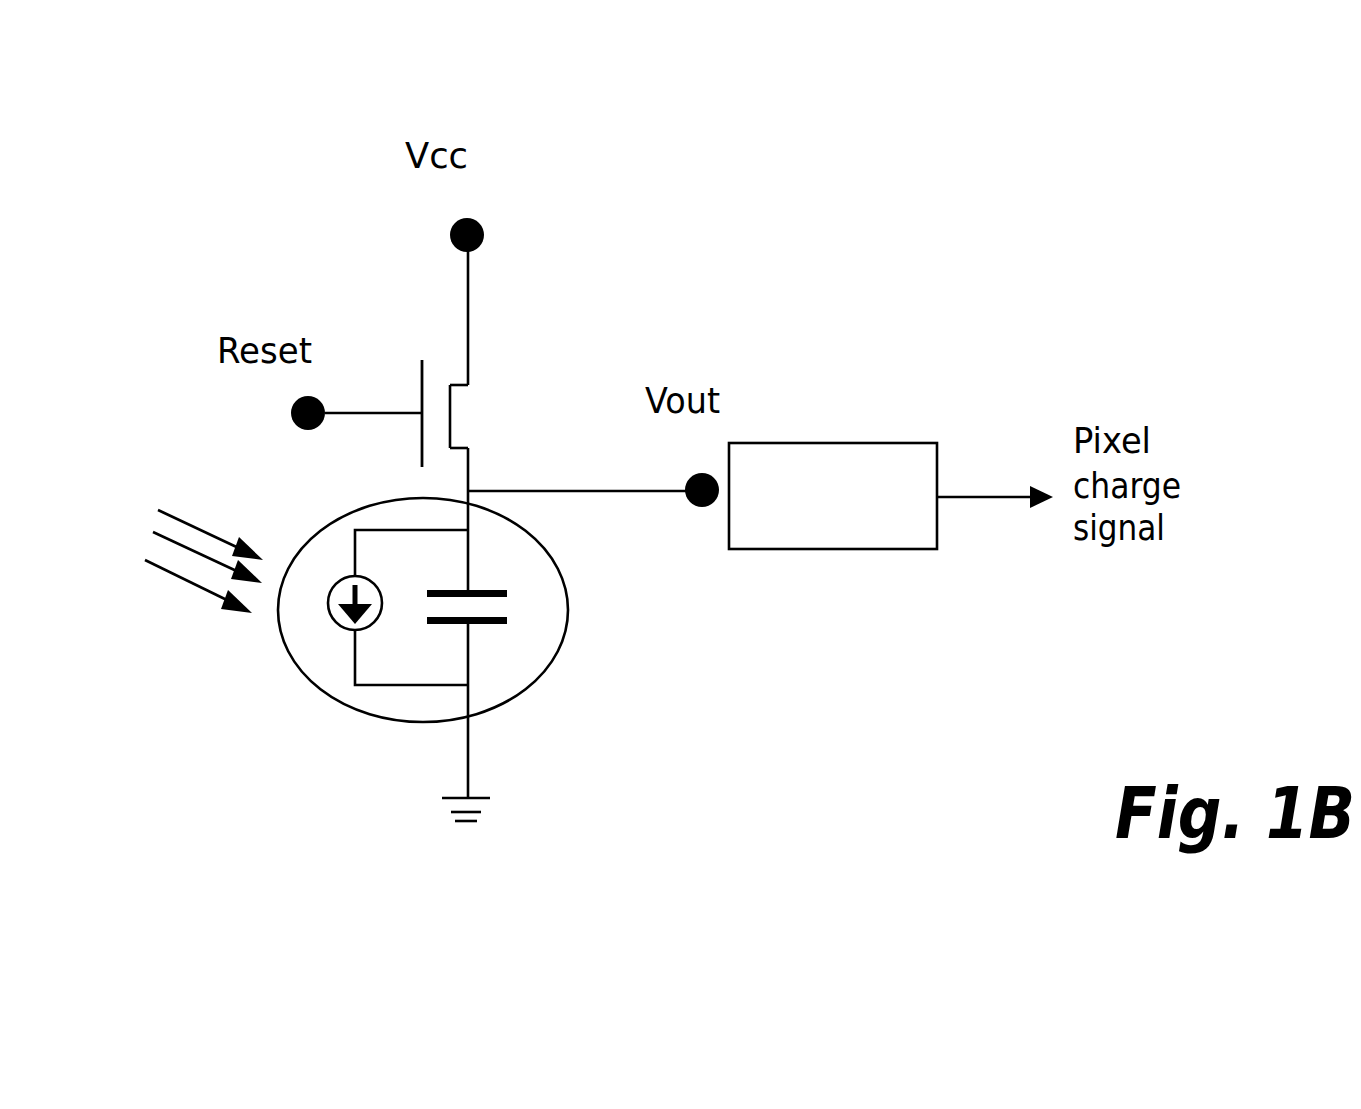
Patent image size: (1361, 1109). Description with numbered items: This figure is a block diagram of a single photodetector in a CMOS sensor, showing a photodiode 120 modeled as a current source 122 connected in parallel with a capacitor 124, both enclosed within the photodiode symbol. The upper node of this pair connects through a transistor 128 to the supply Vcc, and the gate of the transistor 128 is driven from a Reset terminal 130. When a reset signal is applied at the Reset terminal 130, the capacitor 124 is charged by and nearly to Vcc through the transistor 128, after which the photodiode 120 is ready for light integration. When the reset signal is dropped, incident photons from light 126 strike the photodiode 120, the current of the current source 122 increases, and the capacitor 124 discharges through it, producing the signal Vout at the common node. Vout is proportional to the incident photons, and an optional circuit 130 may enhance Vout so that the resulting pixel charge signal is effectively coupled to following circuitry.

The photodiode 120 is at (538, 660).
The current source 122 is at (335, 638).
The capacitor 124 is at (513, 607).
The light 126 is at (170, 560).
The transistor 128 is at (445, 413).
The Reset terminal / circuit 130 is at (278, 423).